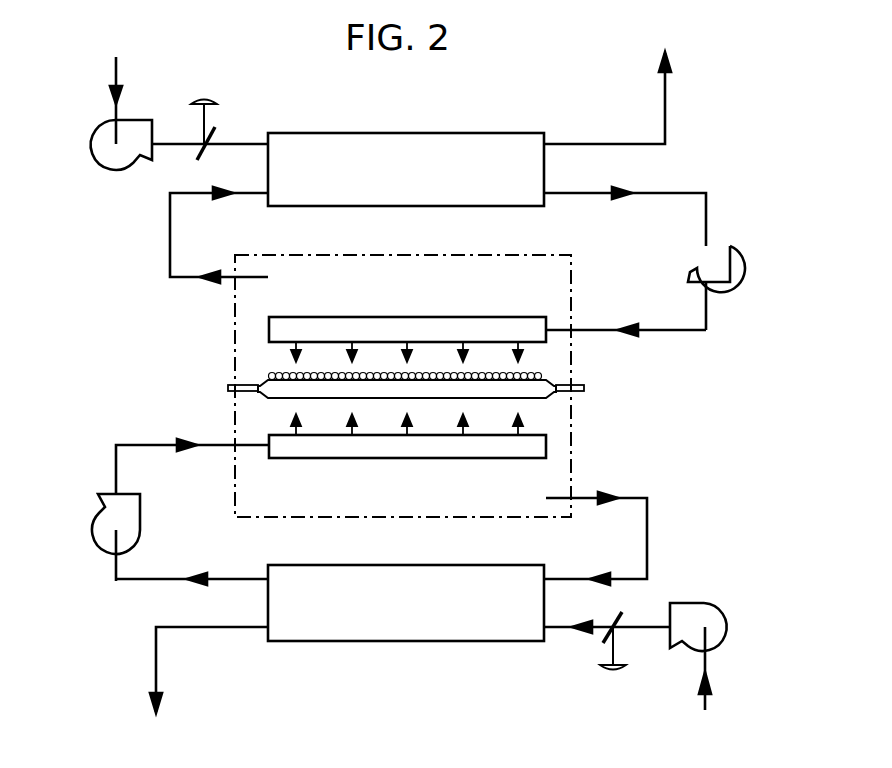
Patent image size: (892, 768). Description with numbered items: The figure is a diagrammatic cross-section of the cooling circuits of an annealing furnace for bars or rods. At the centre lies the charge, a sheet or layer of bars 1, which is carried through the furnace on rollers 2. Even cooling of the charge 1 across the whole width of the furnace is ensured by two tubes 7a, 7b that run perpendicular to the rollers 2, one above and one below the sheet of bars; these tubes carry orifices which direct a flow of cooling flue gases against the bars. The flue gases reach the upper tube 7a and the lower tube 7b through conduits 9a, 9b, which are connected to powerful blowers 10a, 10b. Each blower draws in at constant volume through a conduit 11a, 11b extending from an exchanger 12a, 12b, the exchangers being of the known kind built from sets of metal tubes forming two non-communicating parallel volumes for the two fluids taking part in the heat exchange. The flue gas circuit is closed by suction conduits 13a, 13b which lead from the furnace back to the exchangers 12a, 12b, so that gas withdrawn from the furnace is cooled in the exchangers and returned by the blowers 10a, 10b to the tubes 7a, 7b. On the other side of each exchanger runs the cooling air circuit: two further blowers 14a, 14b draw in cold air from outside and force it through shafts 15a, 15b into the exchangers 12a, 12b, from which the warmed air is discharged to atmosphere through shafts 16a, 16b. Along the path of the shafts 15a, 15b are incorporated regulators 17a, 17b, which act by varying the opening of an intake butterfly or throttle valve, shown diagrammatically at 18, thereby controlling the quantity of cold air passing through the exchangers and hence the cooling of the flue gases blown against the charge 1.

The sheet or layer of bars 1 is at (540, 372).
The rollers 2 is at (522, 388).
The tube 7a is at (410, 332).
The tube 7b is at (468, 448).
The conduit 9a is at (668, 332).
The conduit 9b is at (140, 443).
The blower 10a is at (717, 243).
The blower 10b is at (102, 528).
The conduit 11a is at (685, 190).
The conduit 11b is at (145, 583).
The exchanger 12a is at (397, 155).
The exchanger 12b is at (397, 610).
The suction conduit 13a is at (168, 245).
The suction conduit 13b is at (652, 527).
The blower 14a is at (100, 140).
The blower 14b is at (712, 615).
The shaft 15a is at (238, 142).
The shaft 15b is at (643, 623).
The shaft 16a is at (667, 110).
The shaft 16b is at (155, 667).
The regulator 17a is at (197, 103).
The regulator 17b is at (613, 673).
The intake butterfly or throttle valve 18 is at (197, 158).